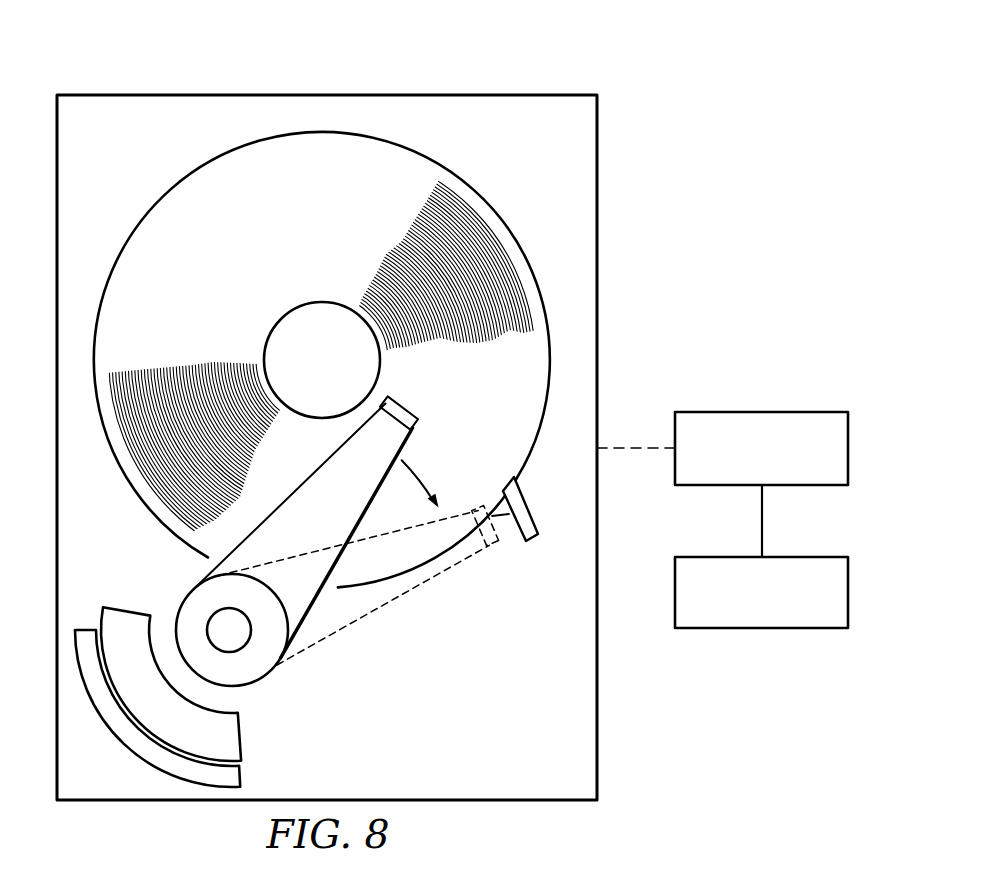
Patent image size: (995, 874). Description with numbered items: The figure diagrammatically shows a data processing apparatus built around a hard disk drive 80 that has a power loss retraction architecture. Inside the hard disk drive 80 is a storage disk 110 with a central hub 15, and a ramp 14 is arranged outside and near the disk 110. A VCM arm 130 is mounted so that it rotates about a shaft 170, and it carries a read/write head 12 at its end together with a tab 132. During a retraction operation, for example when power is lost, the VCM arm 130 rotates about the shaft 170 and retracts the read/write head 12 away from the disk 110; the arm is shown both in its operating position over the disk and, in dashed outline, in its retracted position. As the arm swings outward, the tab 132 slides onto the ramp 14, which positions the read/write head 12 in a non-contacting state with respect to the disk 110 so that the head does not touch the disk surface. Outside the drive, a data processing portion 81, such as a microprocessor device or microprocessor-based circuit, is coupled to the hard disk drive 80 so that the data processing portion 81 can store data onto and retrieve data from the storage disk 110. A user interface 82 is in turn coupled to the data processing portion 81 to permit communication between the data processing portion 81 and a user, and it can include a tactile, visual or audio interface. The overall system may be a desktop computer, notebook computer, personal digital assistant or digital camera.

The hard disk drive 80 is at (232, 88).
The storage disk 110 is at (148, 199).
The spindle hub 15 is at (302, 306).
The tab 132 is at (401, 397).
The read/write head 12 is at (427, 393).
The VCM arm 130 is at (373, 645).
The shaft 170 is at (227, 629).
The ramp 14 is at (531, 542).
The data processing portion 81 is at (780, 411).
The user interface 82 is at (780, 629).